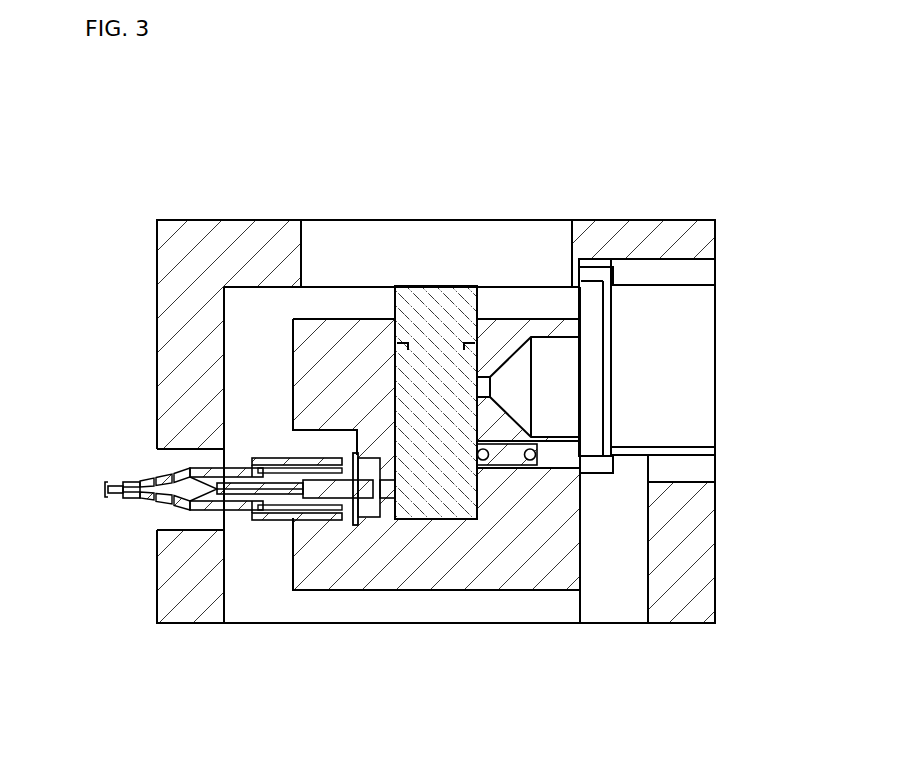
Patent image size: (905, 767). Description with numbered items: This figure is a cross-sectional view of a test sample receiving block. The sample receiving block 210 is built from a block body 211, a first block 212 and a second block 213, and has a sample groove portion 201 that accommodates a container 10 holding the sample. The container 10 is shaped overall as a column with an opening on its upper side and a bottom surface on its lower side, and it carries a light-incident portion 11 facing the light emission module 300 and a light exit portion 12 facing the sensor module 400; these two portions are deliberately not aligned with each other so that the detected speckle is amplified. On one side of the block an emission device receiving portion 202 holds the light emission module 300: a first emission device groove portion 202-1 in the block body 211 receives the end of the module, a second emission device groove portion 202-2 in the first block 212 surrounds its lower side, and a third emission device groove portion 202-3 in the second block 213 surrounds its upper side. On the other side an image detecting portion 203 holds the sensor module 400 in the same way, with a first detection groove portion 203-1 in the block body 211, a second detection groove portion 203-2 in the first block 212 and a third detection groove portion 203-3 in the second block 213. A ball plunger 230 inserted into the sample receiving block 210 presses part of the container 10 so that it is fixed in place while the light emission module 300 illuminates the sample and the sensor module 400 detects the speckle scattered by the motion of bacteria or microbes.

The sample receiving block 210 is at (732, 155).
The second block 213 is at (175, 351).
The block body 211 is at (322, 370).
The first block 212 is at (170, 573).
The light emission module 300 is at (175, 467).
The emission device receiving portion 202 is at (269, 590).
The first emission device groove portion 202-1 is at (332, 537).
The second emission device groove portion 202-2 is at (193, 525).
The third emission device groove portion 202-3 is at (242, 515).
The container 10 is at (426, 431).
The light-incident portion 11 is at (396, 492).
The light exit portion 12 is at (478, 375).
The sample groove portion 201 is at (397, 327).
The ball plunger 230 is at (508, 468).
The sensor module 400 is at (641, 332).
The image detecting portion 203 is at (723, 421).
The first detection groove portion 203-1 is at (560, 440).
The second detection groove portion 203-2 is at (700, 535).
The third detection groove portion 203-3 is at (683, 259).